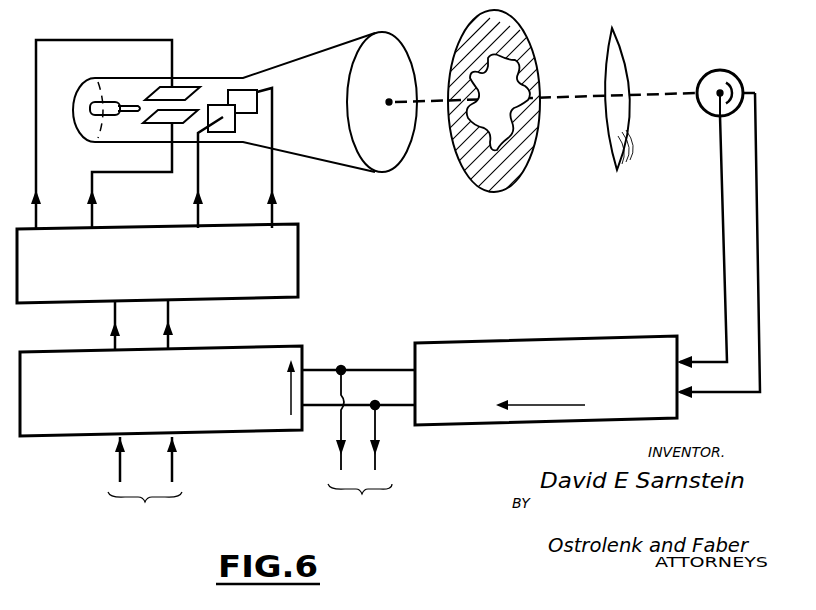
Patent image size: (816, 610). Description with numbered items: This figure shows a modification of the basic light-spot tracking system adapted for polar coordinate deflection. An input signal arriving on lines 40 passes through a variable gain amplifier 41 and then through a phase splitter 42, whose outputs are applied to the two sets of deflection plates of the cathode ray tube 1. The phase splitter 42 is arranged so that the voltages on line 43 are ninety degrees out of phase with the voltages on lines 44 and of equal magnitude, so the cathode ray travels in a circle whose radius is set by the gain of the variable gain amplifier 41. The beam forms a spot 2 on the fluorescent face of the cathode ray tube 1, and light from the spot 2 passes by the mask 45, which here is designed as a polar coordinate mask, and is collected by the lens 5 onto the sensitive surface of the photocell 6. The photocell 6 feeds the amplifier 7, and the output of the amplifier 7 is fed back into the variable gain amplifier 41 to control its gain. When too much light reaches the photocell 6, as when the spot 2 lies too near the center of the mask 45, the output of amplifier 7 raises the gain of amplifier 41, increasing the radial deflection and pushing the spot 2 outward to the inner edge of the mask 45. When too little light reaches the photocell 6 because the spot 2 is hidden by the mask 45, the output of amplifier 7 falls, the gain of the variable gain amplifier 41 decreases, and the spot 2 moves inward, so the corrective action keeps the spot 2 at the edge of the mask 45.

The cathode ray tube 1 is at (307, 56).
The spot 2 is at (403, 68).
The mask 45 is at (520, 40).
The lens 5 is at (622, 55).
The photocell 6 is at (727, 78).
The amplifier 7 is at (540, 340).
The variable gain amplifier 41 is at (302, 348).
The phase splitter 42 is at (299, 266).
The line 43 is at (272, 176).
The lines 44 is at (92, 180).
The lines 40 is at (171, 466).